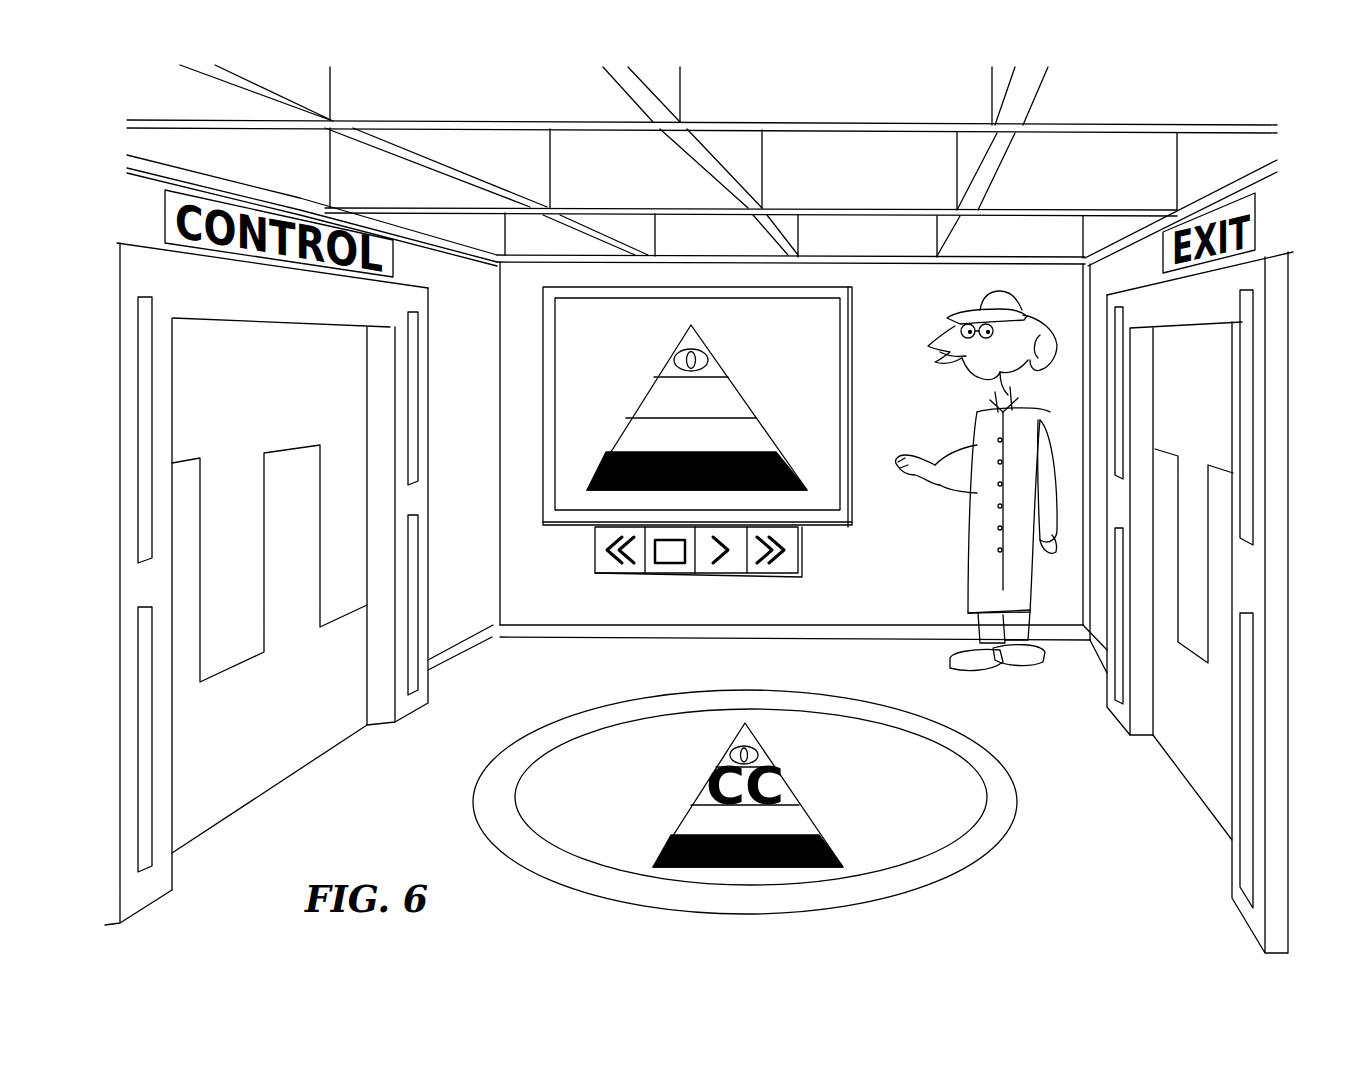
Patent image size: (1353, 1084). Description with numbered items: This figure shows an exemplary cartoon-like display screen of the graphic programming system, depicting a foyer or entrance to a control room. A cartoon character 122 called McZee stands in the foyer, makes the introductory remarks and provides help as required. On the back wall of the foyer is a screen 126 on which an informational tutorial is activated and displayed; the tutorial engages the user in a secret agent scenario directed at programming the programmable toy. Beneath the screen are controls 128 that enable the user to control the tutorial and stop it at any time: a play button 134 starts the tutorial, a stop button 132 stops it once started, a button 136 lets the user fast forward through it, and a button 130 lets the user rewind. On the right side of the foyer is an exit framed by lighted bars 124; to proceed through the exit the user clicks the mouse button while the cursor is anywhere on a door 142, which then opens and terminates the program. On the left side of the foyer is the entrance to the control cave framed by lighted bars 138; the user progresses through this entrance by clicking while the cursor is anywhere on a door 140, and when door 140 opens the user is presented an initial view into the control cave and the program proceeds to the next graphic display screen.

The cartoon character 122 is at (966, 436).
The lighted bars 124 is at (1284, 349).
The screen 126 is at (837, 309).
The controls 128 is at (608, 581).
The rewind button 130 is at (625, 577).
The stop button 132 is at (663, 577).
The play button 134 is at (718, 577).
The fast forward button 136 is at (770, 577).
The lighted bars 138 is at (416, 358).
The door 140 is at (285, 390).
The door 142 is at (1218, 406).